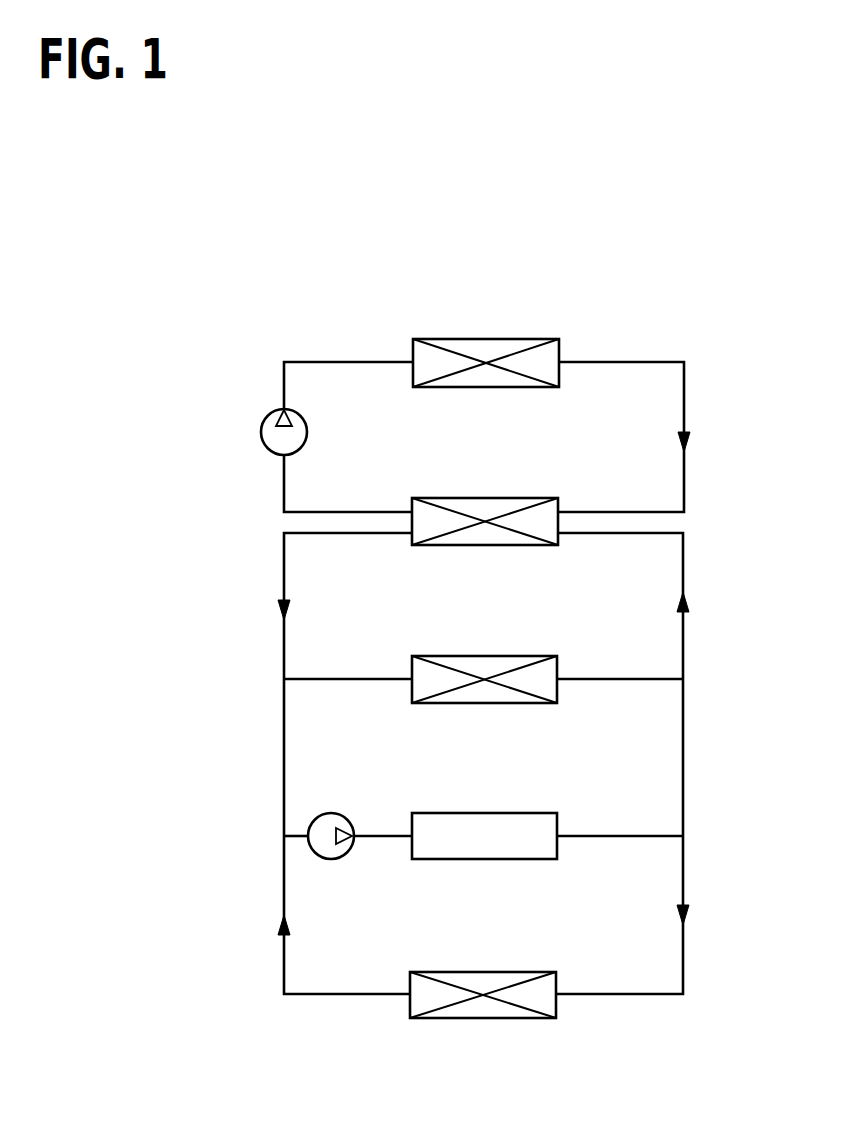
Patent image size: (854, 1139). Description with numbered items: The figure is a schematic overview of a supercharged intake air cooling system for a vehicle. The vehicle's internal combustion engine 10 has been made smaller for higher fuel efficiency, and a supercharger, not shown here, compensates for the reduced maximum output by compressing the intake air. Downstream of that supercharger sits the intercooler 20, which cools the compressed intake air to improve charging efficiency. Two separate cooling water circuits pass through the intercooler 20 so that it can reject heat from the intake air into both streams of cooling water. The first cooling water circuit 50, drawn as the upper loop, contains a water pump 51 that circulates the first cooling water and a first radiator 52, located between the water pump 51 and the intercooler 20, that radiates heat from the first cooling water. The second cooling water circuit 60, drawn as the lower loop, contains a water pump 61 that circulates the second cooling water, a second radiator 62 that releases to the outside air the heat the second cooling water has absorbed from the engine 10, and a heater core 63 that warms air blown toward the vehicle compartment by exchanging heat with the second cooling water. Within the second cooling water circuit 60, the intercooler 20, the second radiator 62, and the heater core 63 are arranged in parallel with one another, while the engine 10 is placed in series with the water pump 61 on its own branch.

The engine 10 is at (534, 860).
The intercooler 20 is at (528, 546).
The first cooling water circuit 50 is at (343, 362).
The water pump 51 is at (262, 427).
The first radiator 52 is at (498, 339).
The second cooling water circuit 60 is at (683, 752).
The water pump 61 is at (333, 859).
The second radiator 62 is at (508, 1019).
The heater core 63 is at (537, 704).